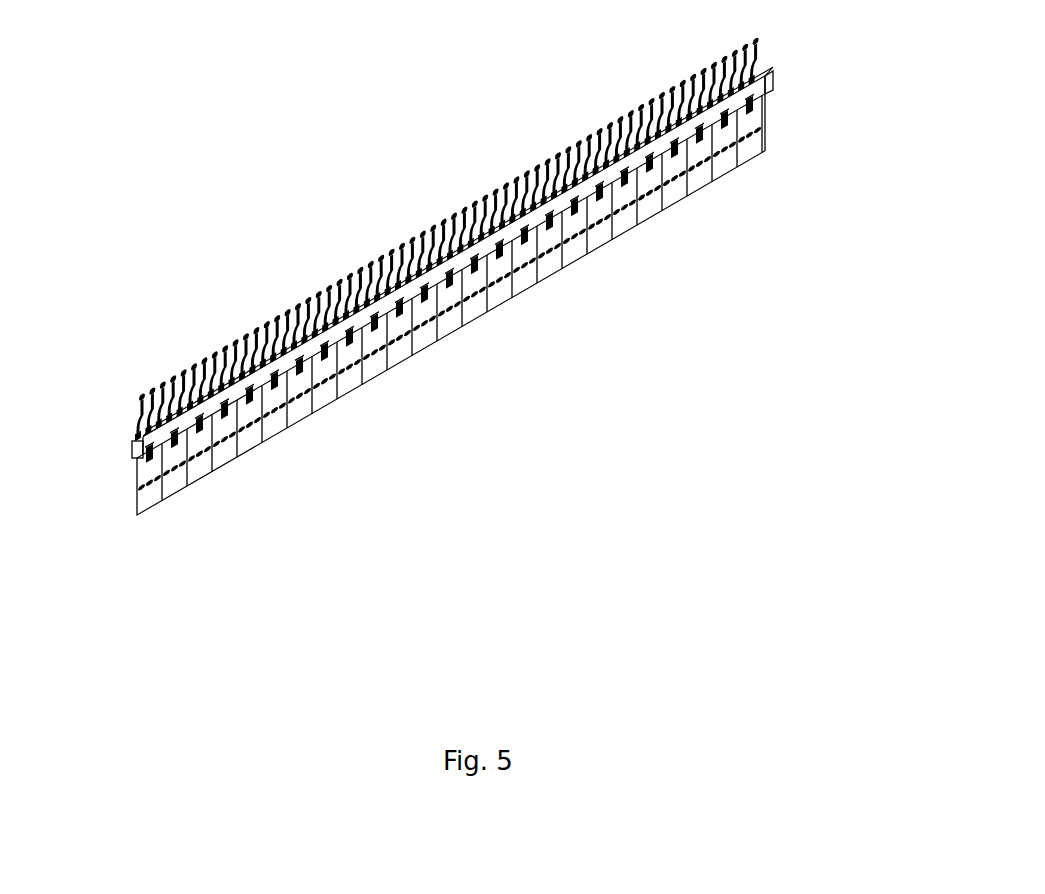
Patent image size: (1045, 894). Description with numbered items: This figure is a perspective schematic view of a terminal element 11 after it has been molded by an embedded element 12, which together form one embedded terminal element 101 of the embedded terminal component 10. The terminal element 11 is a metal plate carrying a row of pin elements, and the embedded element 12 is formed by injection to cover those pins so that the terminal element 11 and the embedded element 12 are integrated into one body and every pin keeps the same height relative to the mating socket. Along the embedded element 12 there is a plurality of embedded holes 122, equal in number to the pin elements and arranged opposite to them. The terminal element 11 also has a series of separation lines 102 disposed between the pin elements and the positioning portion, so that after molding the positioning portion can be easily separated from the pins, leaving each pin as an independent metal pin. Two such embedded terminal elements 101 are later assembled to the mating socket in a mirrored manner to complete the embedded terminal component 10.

The embedded terminal component 10 is at (407, 93).
The terminal element 11 is at (523, 170).
The embedded element 12 is at (767, 95).
The embedded holes 122 is at (764, 78).
The embedded terminal element 101 is at (527, 339).
The separation lines 102 is at (137, 455).